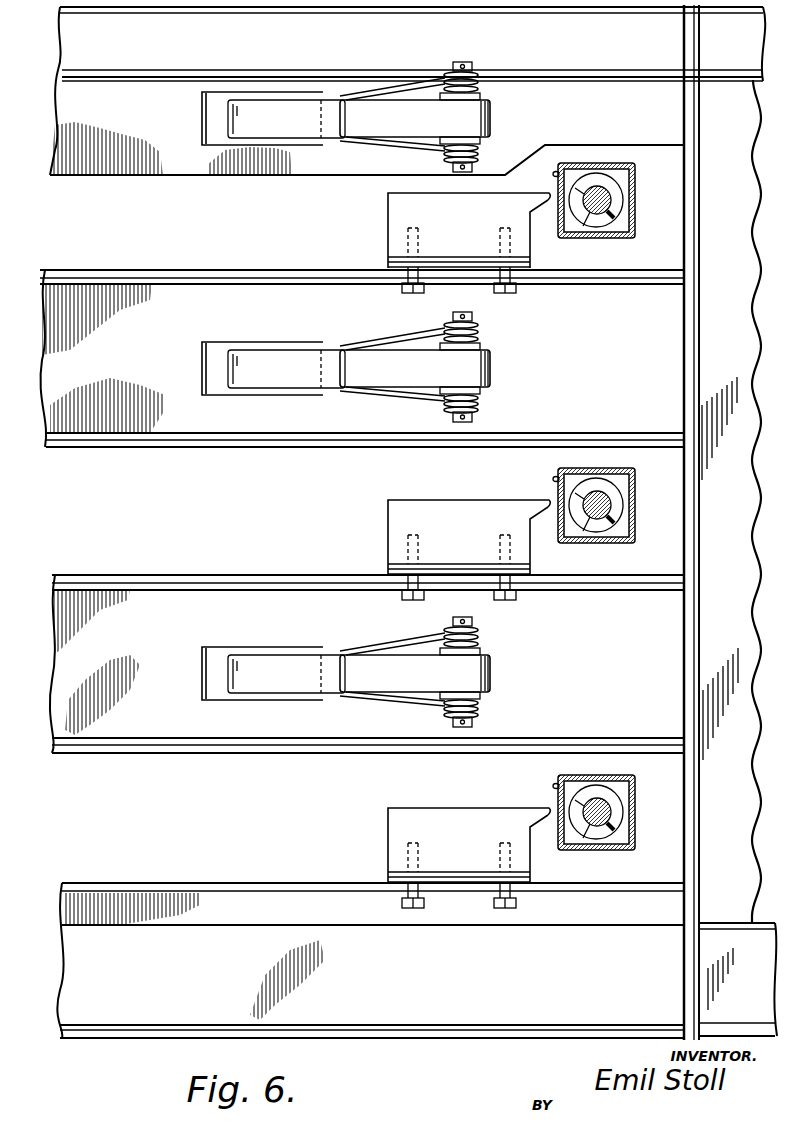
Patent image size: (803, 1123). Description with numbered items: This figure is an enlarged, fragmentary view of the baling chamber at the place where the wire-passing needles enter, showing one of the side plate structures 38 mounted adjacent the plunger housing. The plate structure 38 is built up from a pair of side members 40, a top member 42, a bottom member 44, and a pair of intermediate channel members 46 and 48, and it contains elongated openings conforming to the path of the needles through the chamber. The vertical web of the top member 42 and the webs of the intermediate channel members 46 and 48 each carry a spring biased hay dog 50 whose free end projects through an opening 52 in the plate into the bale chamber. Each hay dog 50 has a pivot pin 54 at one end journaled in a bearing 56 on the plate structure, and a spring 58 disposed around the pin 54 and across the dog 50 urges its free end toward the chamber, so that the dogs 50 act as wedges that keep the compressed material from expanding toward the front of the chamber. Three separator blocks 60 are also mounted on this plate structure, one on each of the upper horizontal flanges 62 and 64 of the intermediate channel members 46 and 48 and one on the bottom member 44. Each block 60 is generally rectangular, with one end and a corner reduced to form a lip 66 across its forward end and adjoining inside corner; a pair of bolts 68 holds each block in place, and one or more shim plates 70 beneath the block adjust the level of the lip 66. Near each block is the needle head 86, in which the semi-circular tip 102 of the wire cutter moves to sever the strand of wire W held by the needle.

The side plate structure 38 is at (90, 640).
The side member 40 is at (699, 332).
The top member 42 is at (60, 52).
The bottom member 44 is at (148, 883).
The intermediate channel member 46 is at (168, 452).
The intermediate channel member 48 is at (212, 574).
The hay dog 50 is at (335, 139).
The opening 52 is at (205, 133).
The pivot pin 54 is at (458, 61).
The bearing 56 is at (485, 140).
The spring 58 is at (415, 150).
The separator block 60 is at (388, 223).
The upper horizontal flange 62 is at (230, 270).
The upper horizontal flange 64 is at (321, 575).
The lip 66 is at (540, 205).
The bolt 68 is at (402, 290).
The shim plate 70 is at (388, 262).
The needle head 86 is at (633, 170).
The semi-circular tip 102 is at (587, 216).
The strand of wire W is at (557, 172).